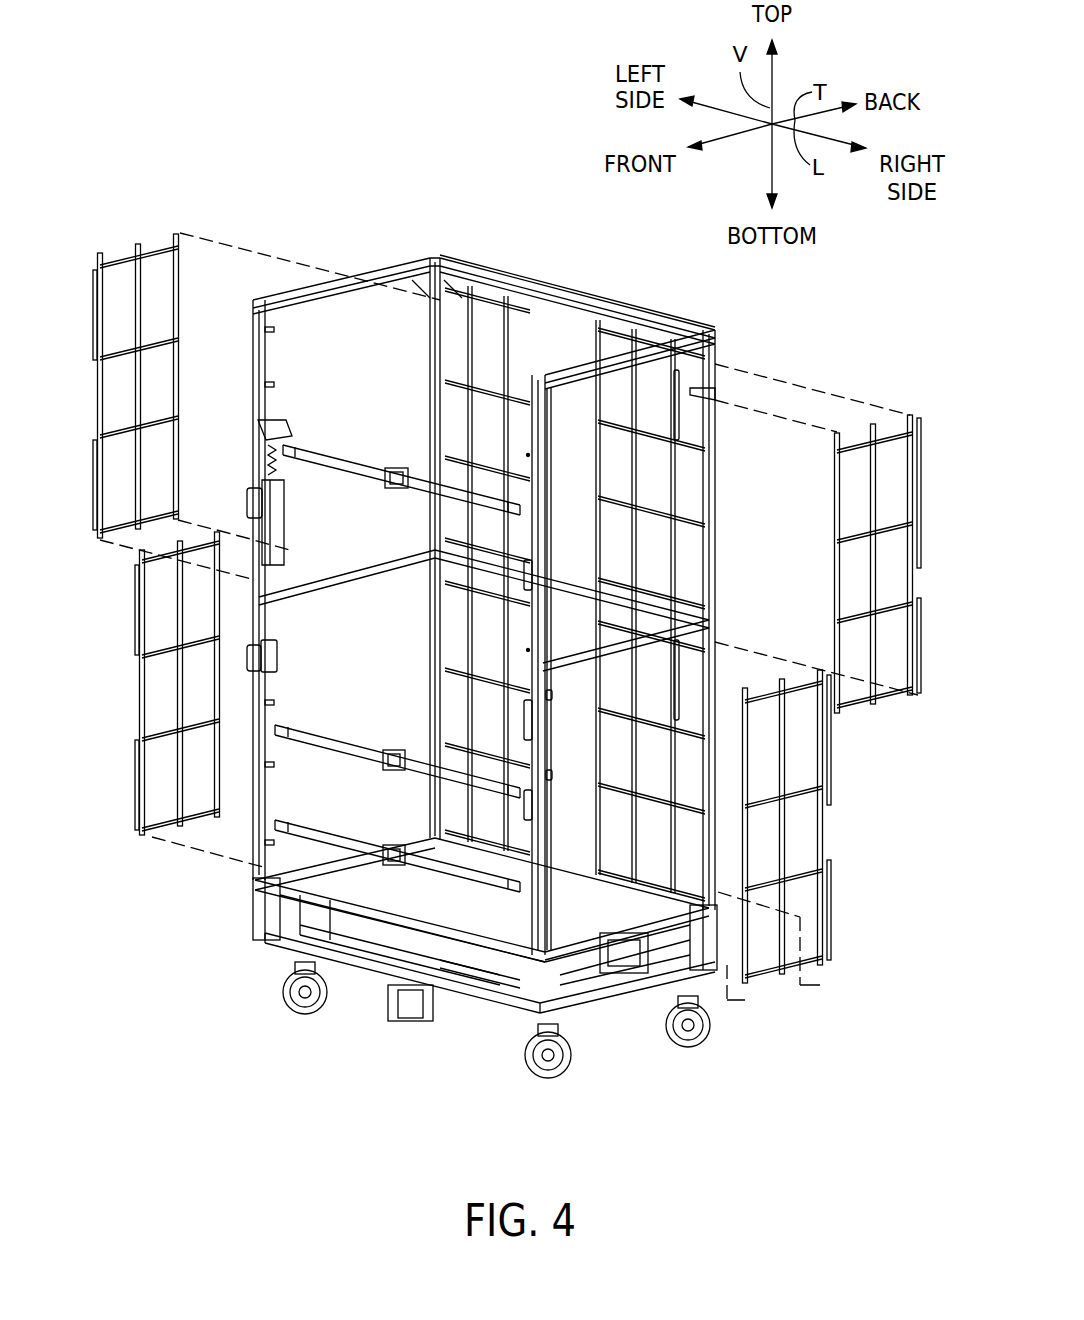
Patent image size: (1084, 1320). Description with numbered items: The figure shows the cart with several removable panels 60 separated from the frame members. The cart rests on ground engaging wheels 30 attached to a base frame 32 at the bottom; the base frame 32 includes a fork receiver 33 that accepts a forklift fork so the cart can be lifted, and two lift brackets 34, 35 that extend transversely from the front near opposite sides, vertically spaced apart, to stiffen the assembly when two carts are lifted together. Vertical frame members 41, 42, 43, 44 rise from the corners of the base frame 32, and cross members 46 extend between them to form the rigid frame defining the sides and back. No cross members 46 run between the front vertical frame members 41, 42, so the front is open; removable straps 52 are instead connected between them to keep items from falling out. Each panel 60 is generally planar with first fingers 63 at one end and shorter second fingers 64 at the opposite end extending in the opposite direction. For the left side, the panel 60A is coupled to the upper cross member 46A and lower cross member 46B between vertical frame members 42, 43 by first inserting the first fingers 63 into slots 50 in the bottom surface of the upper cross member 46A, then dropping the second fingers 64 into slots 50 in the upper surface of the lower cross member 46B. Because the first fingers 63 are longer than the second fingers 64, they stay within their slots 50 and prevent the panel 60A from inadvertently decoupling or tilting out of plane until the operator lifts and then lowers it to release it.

The ground engaging wheels 30 is at (305, 1012).
The base frame 32 is at (258, 900).
The fork receiver 33 is at (410, 1020).
The lift bracket 34 is at (500, 988).
The lift bracket 35 is at (265, 935).
The vertical frame member 41 is at (545, 465).
The vertical frame member 42 is at (257, 340).
The vertical frame member 43 is at (435, 388).
The vertical frame member 44 is at (705, 410).
The cross members 46 is at (480, 265).
The upper cross member 46A is at (368, 278).
The lower cross member 46B is at (402, 548).
The slots 50 is at (386, 300).
The removable straps 52 is at (312, 448).
The removable panels 60 is at (507, 322).
The first panel 60A is at (100, 415).
The first fingers 63 is at (178, 232).
The second fingers 64 is at (178, 518).